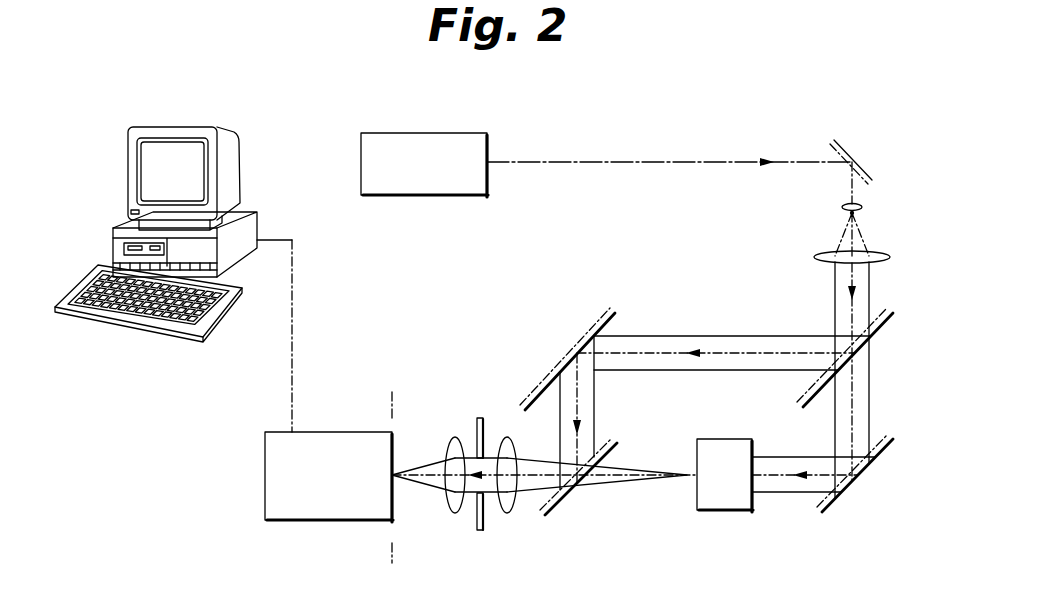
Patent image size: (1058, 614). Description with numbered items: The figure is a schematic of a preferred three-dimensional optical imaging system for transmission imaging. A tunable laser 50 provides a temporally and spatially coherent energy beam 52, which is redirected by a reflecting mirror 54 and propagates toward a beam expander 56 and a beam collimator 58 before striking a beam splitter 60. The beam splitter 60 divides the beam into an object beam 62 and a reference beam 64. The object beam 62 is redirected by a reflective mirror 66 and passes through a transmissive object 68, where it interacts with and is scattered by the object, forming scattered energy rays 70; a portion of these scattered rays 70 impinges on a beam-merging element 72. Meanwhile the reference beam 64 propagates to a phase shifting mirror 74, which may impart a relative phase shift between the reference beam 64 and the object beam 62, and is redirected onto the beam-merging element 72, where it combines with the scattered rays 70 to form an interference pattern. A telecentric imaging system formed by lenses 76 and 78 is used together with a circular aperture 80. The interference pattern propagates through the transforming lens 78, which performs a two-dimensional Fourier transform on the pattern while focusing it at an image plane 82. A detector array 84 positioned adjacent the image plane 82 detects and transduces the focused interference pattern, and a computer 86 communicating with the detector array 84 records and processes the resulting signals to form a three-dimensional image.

The tunable laser 50 is at (430, 196).
The energy beam 52 is at (585, 162).
The reflecting mirror 54 is at (844, 150).
The beam expander 56 is at (842, 207).
The beam collimator 58 is at (815, 255).
The beam splitter 60 is at (883, 327).
The object beam 62 is at (883, 424).
The reference beam 64 is at (678, 336).
The reflective mirror 66 is at (865, 470).
The transmissive object 68 is at (708, 439).
The scattered energy rays 70 is at (636, 449).
The beam-merging element 72 is at (557, 515).
The phase shifting mirror 74 is at (570, 355).
The lens 76 is at (506, 437).
The transforming lens 78 is at (455, 437).
The circular aperture 80 is at (485, 530).
The image plane 82 is at (406, 405).
The detector array 84 is at (265, 460).
The computer 86 is at (236, 147).